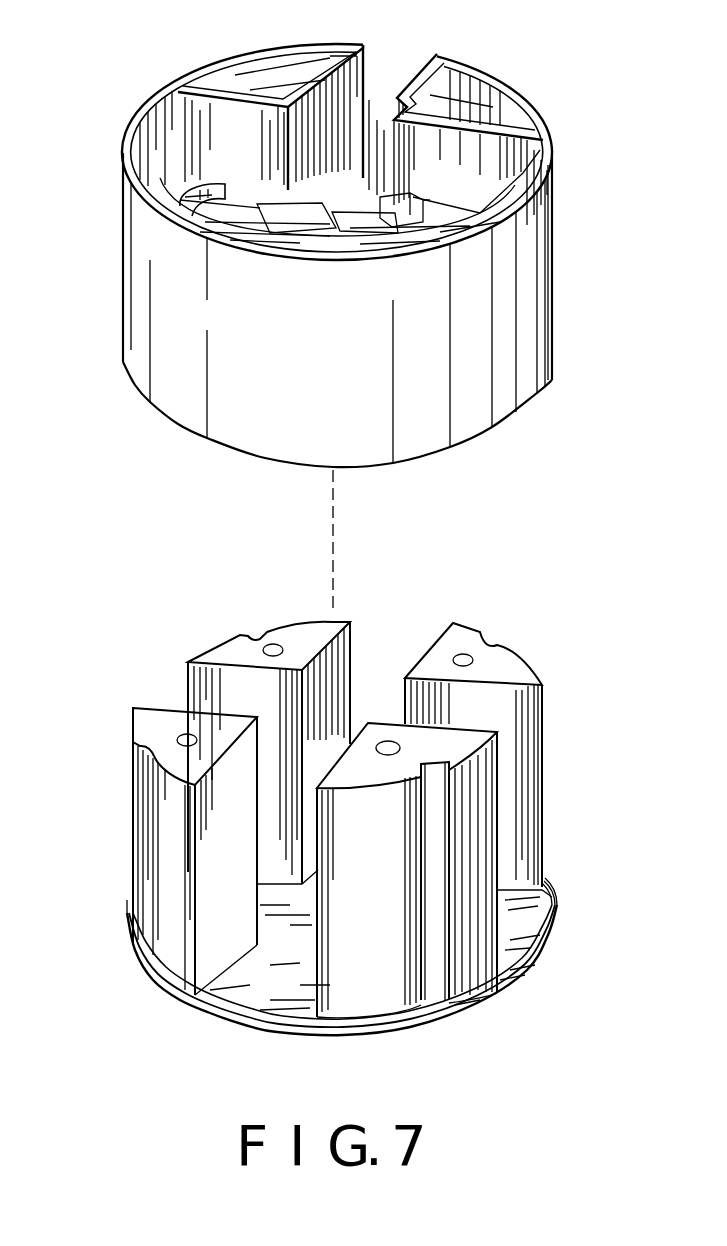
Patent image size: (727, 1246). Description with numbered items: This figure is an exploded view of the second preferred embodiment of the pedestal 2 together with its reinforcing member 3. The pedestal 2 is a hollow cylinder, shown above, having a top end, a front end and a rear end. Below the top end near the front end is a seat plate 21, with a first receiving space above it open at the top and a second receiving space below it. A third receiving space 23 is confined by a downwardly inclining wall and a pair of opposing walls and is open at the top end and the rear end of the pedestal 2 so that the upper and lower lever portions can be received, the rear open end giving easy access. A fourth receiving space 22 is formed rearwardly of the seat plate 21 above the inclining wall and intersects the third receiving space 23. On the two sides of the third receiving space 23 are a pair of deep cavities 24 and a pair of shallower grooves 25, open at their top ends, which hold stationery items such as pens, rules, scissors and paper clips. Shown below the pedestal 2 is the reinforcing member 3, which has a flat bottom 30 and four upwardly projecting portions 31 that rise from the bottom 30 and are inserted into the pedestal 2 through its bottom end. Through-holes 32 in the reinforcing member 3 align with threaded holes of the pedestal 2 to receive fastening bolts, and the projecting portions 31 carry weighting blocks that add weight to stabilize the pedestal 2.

The pedestal 2 is at (113, 231).
The seat plate 21 is at (273, 227).
The fourth receiving space 22 is at (232, 190).
The third receiving space 23 is at (357, 200).
The deep cavities 24 is at (548, 200).
The shallower grooves 25 is at (243, 78).
The reinforcing member 3 is at (559, 722).
The flat bottom 30 is at (277, 992).
The projecting portions 31 is at (297, 633).
The through-holes 32 is at (147, 947).